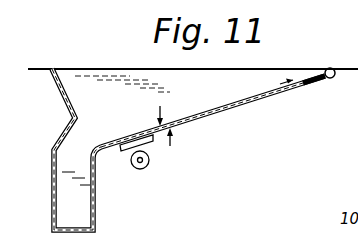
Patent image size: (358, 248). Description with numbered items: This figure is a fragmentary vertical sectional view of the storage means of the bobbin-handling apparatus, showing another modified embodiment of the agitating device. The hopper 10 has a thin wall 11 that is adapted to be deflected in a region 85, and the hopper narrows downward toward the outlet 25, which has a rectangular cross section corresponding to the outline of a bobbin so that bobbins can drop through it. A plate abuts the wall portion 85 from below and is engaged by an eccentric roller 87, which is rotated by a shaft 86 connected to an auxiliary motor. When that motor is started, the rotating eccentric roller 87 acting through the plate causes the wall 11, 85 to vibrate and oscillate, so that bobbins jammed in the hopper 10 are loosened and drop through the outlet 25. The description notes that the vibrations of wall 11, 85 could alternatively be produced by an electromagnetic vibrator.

The hopper 10 is at (298, 86).
The thin wall 11 is at (257, 100).
The outlet 25 is at (82, 210).
The deflectable wall region 85 is at (200, 112).
The shaft 86 is at (147, 157).
The eccentric roller 87 is at (139, 164).